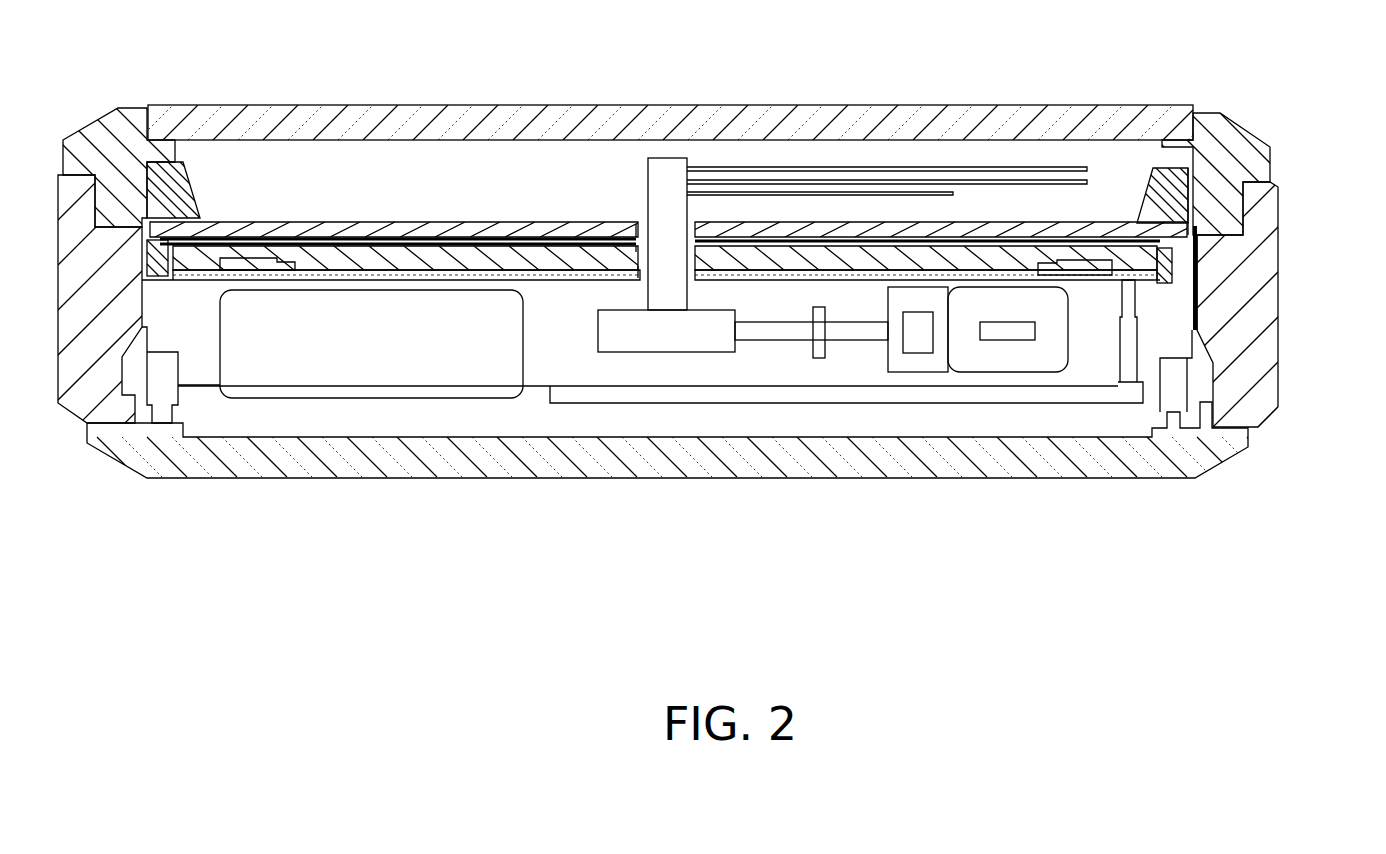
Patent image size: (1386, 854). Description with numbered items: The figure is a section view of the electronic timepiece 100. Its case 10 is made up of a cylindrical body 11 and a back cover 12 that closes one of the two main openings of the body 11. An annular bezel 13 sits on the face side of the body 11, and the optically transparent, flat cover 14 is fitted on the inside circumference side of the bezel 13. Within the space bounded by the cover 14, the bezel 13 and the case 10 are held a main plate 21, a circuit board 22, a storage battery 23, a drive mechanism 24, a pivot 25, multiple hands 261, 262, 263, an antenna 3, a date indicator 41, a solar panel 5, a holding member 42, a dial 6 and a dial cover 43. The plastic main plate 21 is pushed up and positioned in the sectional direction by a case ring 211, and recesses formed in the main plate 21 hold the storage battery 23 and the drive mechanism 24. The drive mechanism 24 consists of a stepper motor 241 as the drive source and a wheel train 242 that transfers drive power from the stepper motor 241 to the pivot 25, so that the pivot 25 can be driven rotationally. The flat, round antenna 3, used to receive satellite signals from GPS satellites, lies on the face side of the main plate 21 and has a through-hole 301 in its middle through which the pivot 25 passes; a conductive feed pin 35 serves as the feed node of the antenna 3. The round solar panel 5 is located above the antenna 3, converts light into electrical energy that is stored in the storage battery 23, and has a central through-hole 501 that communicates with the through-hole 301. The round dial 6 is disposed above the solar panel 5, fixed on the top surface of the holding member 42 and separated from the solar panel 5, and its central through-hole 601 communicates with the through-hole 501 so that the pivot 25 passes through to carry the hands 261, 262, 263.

The electronic timepiece 100 is at (1185, 82).
The case 10 is at (716, 329).
The body 11 is at (1258, 370).
The back cover 12 is at (1228, 448).
The bezel 13 is at (1258, 150).
The cover 14 is at (1058, 125).
The main plate 21 is at (1200, 318).
The case ring 211 is at (158, 387).
The circuit board 22 is at (578, 392).
The storage battery 23 is at (405, 362).
The drive mechanism 24 is at (833, 441).
The stepper motor 241 is at (966, 374).
The wheel train 242 is at (737, 355).
The pivot 25 is at (673, 178).
The hand 261 is at (925, 167).
The hand 262 is at (893, 181).
The hand 263 is at (843, 191).
The antenna 3 is at (372, 232).
The through-hole 301 is at (641, 270).
The feed pin 35 is at (1128, 358).
The date indicator 41 is at (264, 240).
The holding member 42 is at (1197, 256).
The dial cover 43 is at (1160, 172).
The solar panel 5 is at (413, 239).
The through-hole 501 is at (637, 224).
The dial 6 is at (465, 226).
The through-hole 601 is at (644, 248).